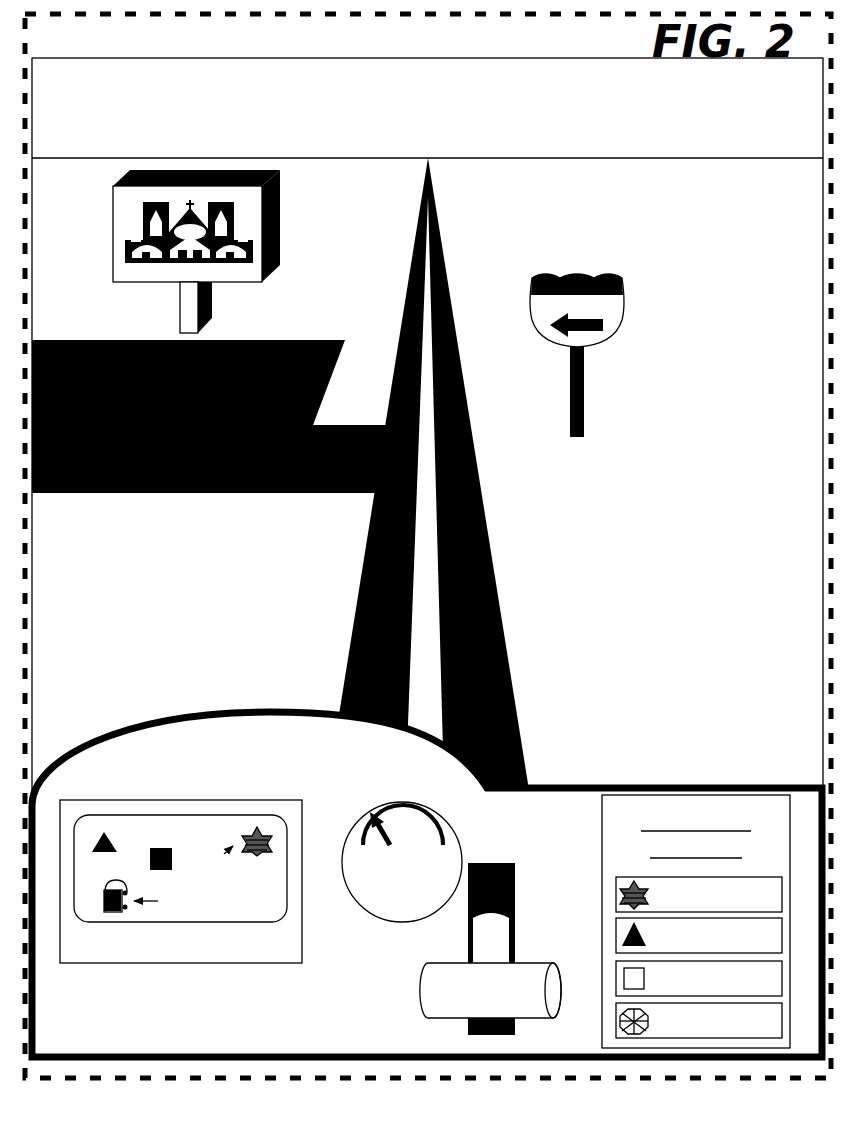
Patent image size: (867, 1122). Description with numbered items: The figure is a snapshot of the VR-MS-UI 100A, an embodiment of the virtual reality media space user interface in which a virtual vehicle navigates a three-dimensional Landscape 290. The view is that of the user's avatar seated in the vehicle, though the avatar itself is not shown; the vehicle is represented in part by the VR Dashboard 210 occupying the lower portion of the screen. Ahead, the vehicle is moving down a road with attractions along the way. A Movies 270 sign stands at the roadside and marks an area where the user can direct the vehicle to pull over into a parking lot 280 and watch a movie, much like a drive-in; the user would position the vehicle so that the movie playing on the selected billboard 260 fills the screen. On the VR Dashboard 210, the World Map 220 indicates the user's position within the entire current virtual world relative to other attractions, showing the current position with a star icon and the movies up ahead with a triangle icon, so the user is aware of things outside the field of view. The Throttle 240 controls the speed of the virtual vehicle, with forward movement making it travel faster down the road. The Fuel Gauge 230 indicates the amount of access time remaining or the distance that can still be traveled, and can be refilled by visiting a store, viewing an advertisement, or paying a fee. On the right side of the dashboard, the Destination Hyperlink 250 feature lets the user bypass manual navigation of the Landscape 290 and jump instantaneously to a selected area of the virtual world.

The VR-MS-UI 100A is at (497, 45).
The 3D Landscape 290 is at (572, 118).
The billboard 260 is at (286, 203).
The parking lot 280 is at (280, 332).
The Movies sign 270 is at (624, 302).
The VR Dashboard 210 is at (280, 793).
The World Map 220 is at (266, 955).
The Fuel Gauge 230 is at (426, 801).
The Throttle 240 is at (500, 849).
The Destination Hyperlink 250 is at (600, 812).